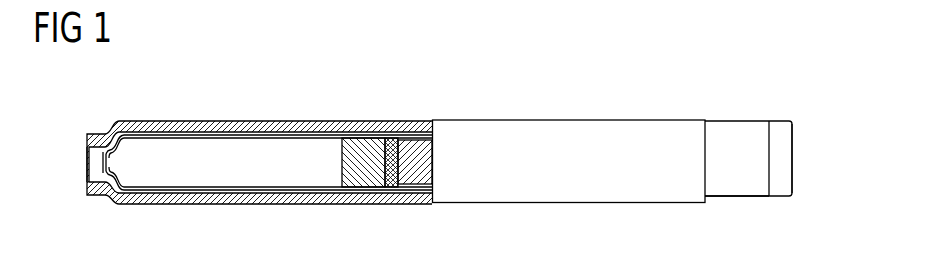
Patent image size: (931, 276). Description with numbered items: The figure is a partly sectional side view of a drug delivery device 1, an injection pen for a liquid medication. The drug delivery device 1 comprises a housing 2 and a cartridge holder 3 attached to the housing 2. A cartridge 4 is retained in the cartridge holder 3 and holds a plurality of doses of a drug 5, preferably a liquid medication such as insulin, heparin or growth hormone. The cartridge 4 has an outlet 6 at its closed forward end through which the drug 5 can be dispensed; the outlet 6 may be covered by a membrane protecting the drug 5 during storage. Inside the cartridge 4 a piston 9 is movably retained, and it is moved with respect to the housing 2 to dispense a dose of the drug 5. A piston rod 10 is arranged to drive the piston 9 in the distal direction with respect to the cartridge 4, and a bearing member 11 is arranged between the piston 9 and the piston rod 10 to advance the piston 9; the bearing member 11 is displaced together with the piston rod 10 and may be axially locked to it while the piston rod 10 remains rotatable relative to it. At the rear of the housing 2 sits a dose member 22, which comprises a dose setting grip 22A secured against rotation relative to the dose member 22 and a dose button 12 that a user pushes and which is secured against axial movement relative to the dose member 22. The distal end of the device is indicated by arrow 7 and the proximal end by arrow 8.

The drug delivery device 1 is at (645, 87).
The housing 2 is at (543, 132).
The cartridge holder 3 is at (168, 120).
The cartridge 4 is at (308, 133).
The drug 5 is at (248, 148).
The outlet 6 is at (102, 164).
The arrow indicating distal end 7 is at (74, 174).
The arrow indicating proximal end 8 is at (805, 168).
The piston 9 is at (363, 140).
The piston rod 10 is at (413, 140).
The bearing member 11 is at (392, 176).
The dose button 12 is at (778, 130).
The dose member 22 is at (770, 208).
The dose setting grip 22A is at (730, 195).